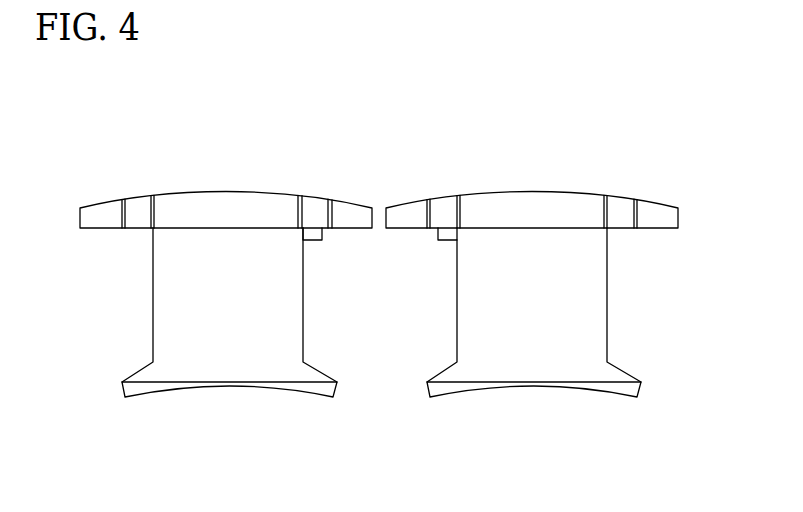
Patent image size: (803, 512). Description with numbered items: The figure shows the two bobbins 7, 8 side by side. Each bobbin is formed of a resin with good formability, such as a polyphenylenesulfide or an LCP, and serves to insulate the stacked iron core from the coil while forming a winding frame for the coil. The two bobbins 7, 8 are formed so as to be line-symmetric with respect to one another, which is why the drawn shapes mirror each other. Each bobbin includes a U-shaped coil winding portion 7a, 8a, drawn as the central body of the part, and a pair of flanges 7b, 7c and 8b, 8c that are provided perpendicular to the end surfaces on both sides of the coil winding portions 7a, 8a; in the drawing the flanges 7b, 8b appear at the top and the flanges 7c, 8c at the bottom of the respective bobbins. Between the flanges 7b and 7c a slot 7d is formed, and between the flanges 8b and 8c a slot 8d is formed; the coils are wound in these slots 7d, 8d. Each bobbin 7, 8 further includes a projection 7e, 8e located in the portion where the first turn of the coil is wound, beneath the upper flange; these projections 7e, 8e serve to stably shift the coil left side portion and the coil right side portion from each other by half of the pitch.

The bobbin 7 is at (217, 208).
The coil winding portion 7a is at (165, 332).
The flange 7b is at (130, 212).
The flange 7c is at (150, 393).
The slot 7d is at (117, 280).
The projection 7e is at (321, 246).
The bobbin 8 is at (510, 210).
The coil winding portion 8a is at (597, 322).
The flange 8b is at (617, 208).
The flange 8c is at (632, 383).
The slot 8d is at (645, 265).
The projection 8e is at (442, 243).